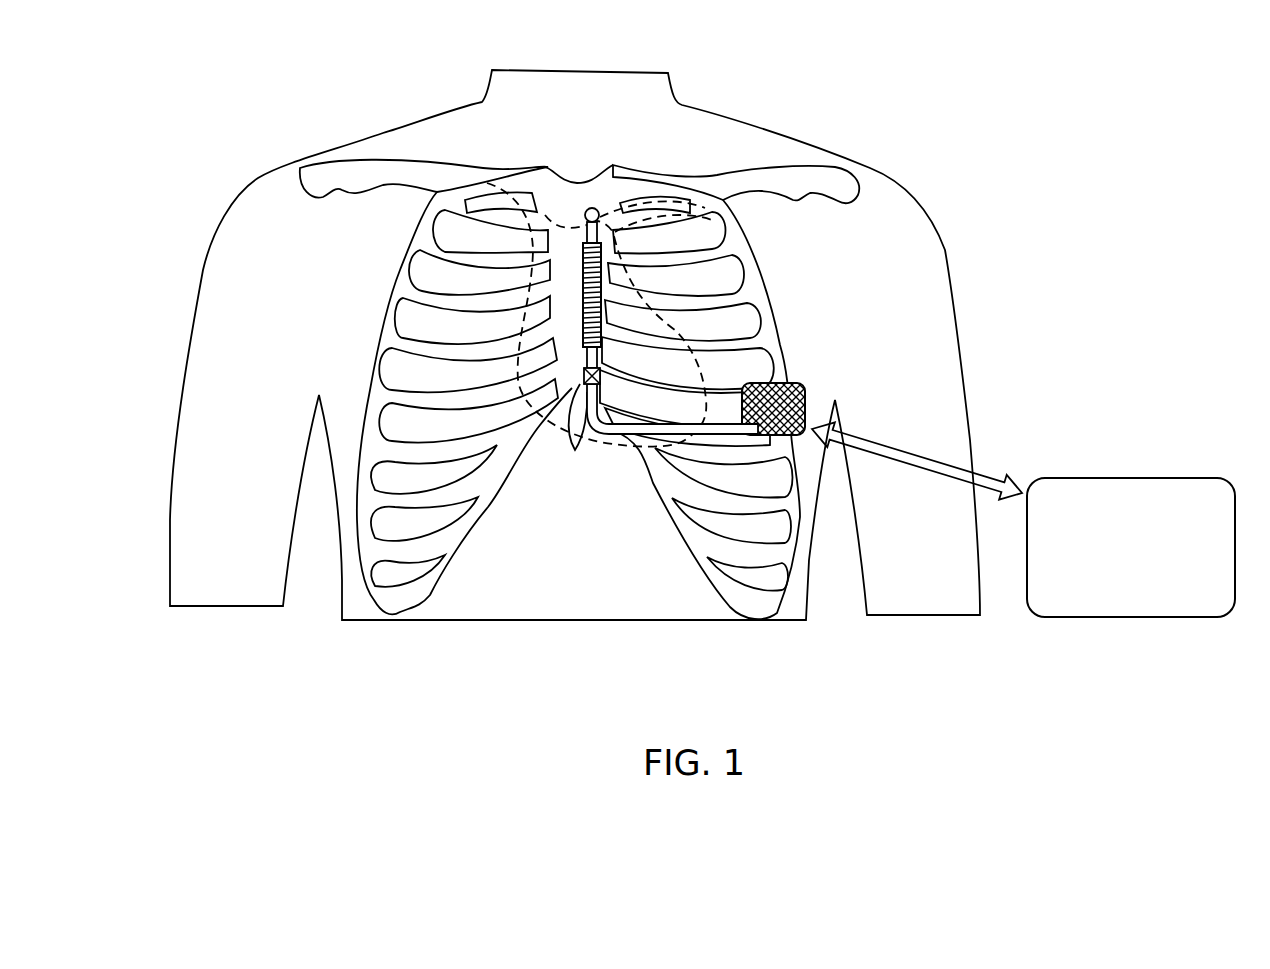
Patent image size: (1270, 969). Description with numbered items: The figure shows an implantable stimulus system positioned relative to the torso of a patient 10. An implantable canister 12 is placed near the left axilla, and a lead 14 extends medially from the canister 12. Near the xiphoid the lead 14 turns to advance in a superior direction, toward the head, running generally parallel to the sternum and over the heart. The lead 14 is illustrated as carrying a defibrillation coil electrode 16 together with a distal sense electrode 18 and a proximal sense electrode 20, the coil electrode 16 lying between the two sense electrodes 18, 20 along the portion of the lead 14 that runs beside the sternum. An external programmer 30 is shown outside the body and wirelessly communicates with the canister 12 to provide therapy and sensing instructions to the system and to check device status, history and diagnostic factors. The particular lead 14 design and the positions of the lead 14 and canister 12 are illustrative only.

The patient 10 is at (710, 125).
The implantable canister 12 is at (802, 383).
The lead 14 is at (650, 436).
The defibrillation coil electrode 16 is at (583, 262).
The distal sense electrode 18 is at (593, 207).
The proximal sense electrode 20 is at (580, 384).
The external programmer 30 is at (1130, 478).